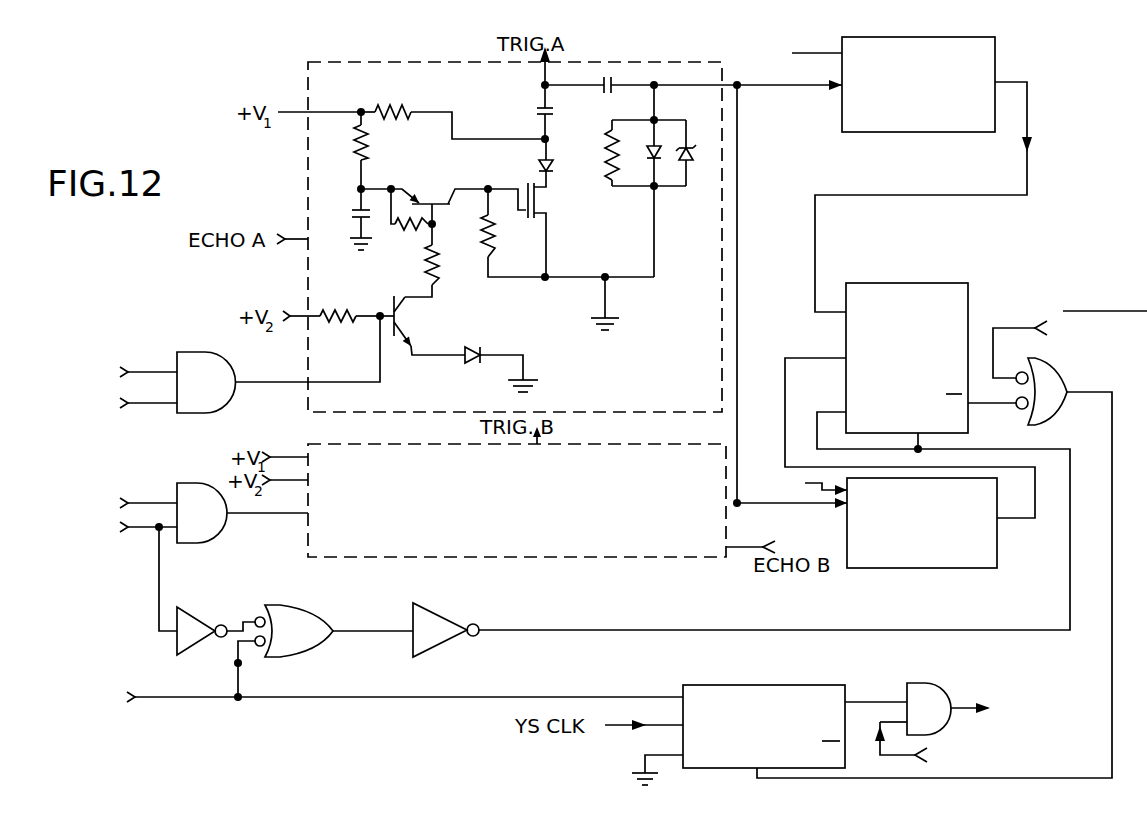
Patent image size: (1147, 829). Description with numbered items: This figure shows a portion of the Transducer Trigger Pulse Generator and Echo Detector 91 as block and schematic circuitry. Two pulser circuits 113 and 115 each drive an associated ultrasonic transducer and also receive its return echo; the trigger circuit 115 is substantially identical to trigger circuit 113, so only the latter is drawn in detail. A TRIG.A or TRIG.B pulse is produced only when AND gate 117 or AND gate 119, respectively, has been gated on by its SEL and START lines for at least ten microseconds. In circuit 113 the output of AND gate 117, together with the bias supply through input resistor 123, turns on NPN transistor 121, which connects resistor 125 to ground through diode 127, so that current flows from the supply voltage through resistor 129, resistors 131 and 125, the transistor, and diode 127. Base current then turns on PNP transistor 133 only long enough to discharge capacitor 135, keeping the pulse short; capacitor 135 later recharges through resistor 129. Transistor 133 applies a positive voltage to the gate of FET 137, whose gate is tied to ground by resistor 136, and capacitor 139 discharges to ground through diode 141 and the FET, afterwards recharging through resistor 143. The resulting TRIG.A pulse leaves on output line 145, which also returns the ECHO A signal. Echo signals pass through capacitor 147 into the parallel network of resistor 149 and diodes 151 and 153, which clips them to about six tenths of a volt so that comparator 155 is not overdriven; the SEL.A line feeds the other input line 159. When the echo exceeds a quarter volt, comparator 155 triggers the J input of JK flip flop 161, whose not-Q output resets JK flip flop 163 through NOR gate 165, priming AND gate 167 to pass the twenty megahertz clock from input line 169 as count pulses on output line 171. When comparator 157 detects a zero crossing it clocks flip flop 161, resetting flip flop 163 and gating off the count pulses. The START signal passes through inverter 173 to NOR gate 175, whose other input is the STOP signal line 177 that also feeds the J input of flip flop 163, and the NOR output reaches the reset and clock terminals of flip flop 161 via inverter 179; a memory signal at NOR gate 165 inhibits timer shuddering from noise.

The Transducer Trigger Pulse Generator and Echo Detector 91 is at (613, 58).
The pulser circuit 113 is at (356, 62).
The pulser circuit 115 is at (520, 557).
The AND gate 117 is at (233, 364).
The AND gate 119 is at (180, 483).
The NPN transistor 121 is at (403, 315).
The input resistor 123 is at (340, 312).
The resistor 125 is at (437, 280).
The diode 127 is at (478, 348).
The resistor 129 is at (367, 148).
The resistor 131 is at (405, 229).
The PNP transistor 133 is at (430, 198).
The capacitor 135 is at (355, 208).
The resistor 136 is at (493, 237).
The FET 137 is at (539, 197).
The capacitor 139 is at (539, 112).
The diode 141 is at (548, 162).
The resistor 143 is at (383, 104).
The output line 145 is at (543, 78).
The capacitor 147 is at (614, 77).
The resistor 149 is at (611, 132).
The diode 151 is at (651, 143).
The diode 153 is at (688, 140).
The comparator 155 is at (995, 44).
The comparator 157 is at (962, 568).
The input line 159 is at (796, 56).
The JK flip flop 161 is at (908, 283).
The JK flip flop 163 is at (700, 685).
The NOR gate 165 is at (1045, 358).
The AND gate 167 is at (920, 683).
The input line 169 is at (912, 758).
The output line 171 is at (960, 705).
The inverter 173 is at (187, 607).
The NOR gate 175 is at (292, 605).
The STOP signal line 177 is at (178, 699).
The inverter 179 is at (437, 615).